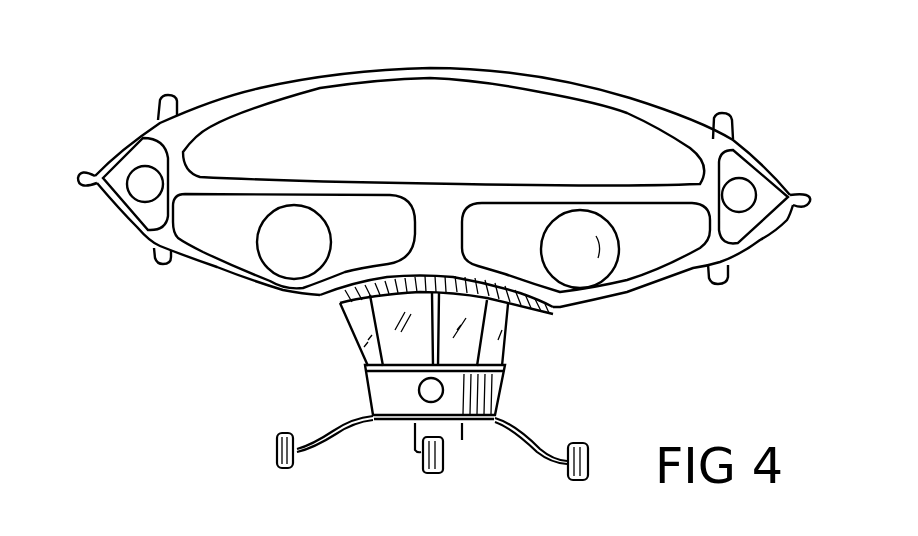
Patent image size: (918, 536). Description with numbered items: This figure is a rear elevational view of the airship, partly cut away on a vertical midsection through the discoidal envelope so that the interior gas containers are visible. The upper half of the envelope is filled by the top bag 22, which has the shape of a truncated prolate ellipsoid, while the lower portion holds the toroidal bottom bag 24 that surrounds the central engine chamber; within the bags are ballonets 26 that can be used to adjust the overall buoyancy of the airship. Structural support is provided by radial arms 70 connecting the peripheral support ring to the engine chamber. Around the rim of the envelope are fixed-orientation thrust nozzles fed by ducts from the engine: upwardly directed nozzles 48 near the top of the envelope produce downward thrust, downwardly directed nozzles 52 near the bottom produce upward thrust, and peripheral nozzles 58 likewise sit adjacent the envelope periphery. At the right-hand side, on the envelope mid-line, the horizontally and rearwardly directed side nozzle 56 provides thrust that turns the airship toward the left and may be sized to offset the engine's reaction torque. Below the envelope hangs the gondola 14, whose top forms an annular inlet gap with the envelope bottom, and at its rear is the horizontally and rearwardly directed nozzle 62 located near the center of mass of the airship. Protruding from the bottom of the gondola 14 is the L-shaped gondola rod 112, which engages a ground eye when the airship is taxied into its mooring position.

The gondola 14 is at (378, 382).
The top bag 22 is at (360, 108).
The bottom bag 24 is at (238, 238).
The ballonet 26 is at (283, 250).
The upwardly directed nozzle 48 is at (157, 100).
The downwardly directed nozzle 52 is at (154, 257).
The right side nozzle 56 is at (747, 190).
The peripheral nozzle 58 is at (126, 190).
The rear gondola nozzle 62 is at (447, 383).
The radial arm 70 is at (567, 80).
The gondola rod 112 is at (465, 428).